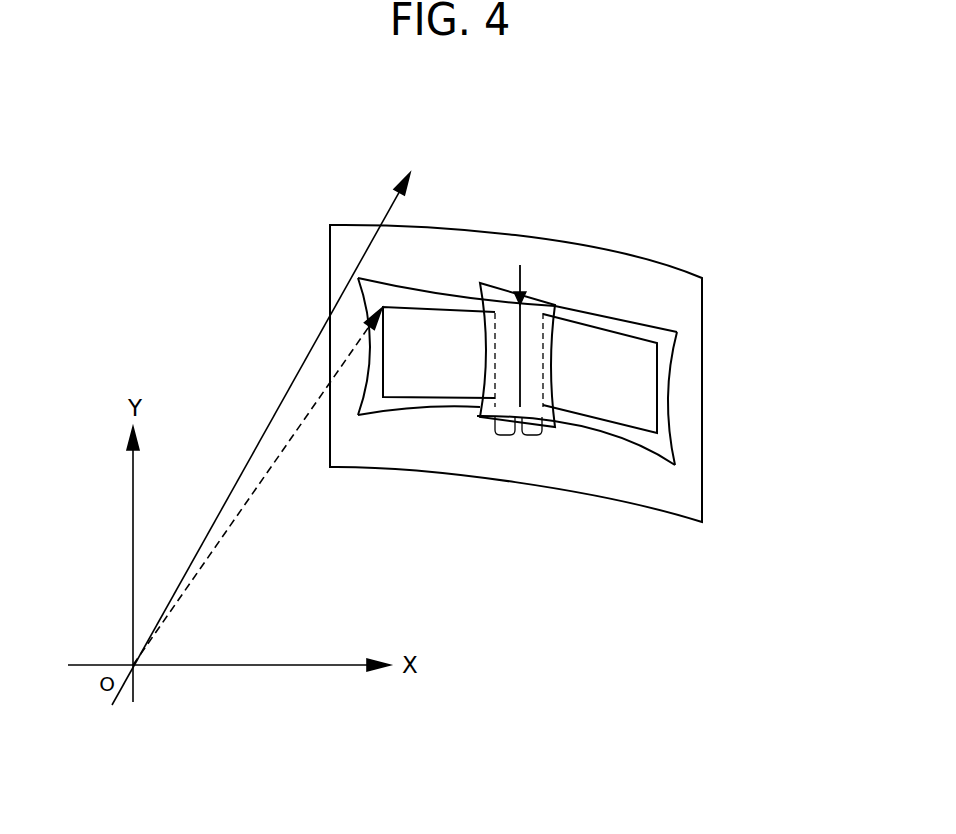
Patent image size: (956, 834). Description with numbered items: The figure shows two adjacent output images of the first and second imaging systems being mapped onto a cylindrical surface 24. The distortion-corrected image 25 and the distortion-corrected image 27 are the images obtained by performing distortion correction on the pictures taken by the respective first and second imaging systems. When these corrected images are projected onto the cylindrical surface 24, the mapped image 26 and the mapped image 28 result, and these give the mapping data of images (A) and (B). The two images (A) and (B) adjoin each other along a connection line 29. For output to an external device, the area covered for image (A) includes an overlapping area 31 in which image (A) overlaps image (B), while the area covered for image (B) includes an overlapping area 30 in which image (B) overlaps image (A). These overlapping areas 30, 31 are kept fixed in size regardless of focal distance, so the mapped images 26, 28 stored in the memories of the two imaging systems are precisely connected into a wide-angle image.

The cylindrical surface 24 is at (705, 458).
The distortion-corrected image 25 is at (420, 293).
The mapped image (A) 26 is at (453, 307).
The distortion-corrected image 27 is at (612, 319).
The mapped image (B) 28 is at (640, 335).
The connection line 29 is at (525, 280).
The overlapping area 30 is at (507, 437).
The overlapping area 31 is at (533, 437).